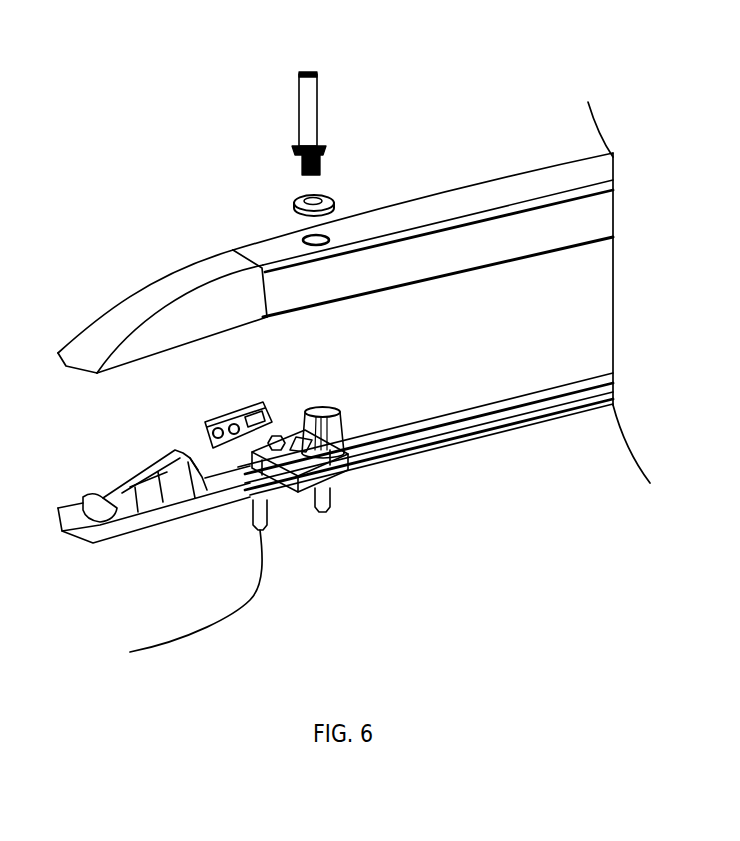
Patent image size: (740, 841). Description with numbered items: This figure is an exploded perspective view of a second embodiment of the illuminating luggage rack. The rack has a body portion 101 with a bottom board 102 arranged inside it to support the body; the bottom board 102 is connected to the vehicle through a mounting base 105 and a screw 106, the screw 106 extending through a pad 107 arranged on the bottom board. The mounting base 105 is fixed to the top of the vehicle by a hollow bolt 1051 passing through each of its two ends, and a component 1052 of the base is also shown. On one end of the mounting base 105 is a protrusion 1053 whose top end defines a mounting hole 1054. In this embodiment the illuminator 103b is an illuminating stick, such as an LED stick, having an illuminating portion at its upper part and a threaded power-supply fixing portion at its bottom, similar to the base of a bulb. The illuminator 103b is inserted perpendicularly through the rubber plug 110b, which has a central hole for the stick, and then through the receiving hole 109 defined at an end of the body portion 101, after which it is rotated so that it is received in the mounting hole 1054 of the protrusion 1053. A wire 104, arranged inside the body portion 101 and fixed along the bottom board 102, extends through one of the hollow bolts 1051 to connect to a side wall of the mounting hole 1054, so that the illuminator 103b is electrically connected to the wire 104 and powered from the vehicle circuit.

The body portion 101 is at (527, 177).
The bottom board 102 is at (505, 266).
The illuminator 103b is at (317, 125).
The wire 104 is at (252, 599).
The mounting base 105 is at (343, 476).
The screw 106 is at (300, 440).
The pad 107 is at (275, 432).
The receiving hole 109 is at (284, 229).
The rubber plug 110b is at (334, 205).
The hollow bolt 1051 is at (328, 512).
The bracket 1052 is at (332, 480).
The protrusion 1053 is at (347, 423).
The mounting hole 1054 is at (330, 380).